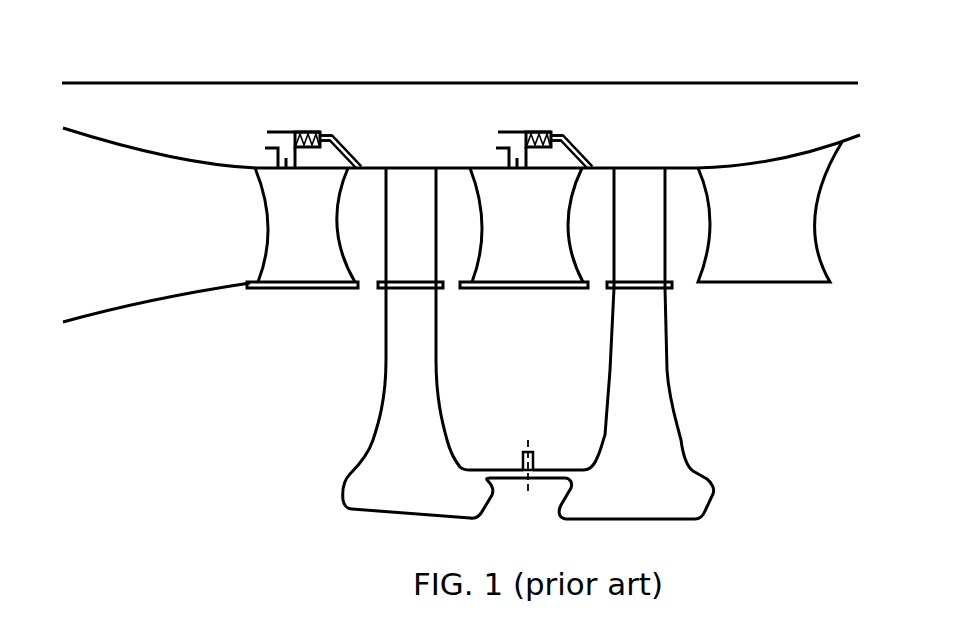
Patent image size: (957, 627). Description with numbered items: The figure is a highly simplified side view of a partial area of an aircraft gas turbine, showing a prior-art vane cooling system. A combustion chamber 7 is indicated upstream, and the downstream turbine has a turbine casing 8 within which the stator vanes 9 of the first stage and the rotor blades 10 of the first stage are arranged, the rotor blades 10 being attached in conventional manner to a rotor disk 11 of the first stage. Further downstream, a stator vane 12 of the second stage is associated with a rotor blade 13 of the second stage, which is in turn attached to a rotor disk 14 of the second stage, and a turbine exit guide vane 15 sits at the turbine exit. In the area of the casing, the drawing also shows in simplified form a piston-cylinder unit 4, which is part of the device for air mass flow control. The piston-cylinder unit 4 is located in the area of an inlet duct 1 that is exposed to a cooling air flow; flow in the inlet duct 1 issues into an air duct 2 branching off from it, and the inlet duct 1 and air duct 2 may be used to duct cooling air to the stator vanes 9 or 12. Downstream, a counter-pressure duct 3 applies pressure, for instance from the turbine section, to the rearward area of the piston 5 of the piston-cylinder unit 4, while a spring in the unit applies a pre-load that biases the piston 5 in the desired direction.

The inlet duct 1 is at (272, 142).
The air duct 2 is at (272, 170).
The counter-pressure duct 3 is at (352, 149).
The piston-cylinder unit 4 is at (338, 130).
The piston 5 is at (298, 137).
The combustion chamber 7 is at (112, 285).
The turbine casing 8 is at (650, 84).
The stator vanes of the first stage 9 is at (290, 274).
The rotor blades of the first stage 10 is at (390, 273).
The rotor disk of the first stage 11 is at (392, 417).
The stator vane of the second stage 12 is at (507, 273).
The rotor blade of the second stage 13 is at (622, 274).
The rotor disk of the second stage 14 is at (630, 387).
The turbine exit guide vane 15 is at (718, 274).